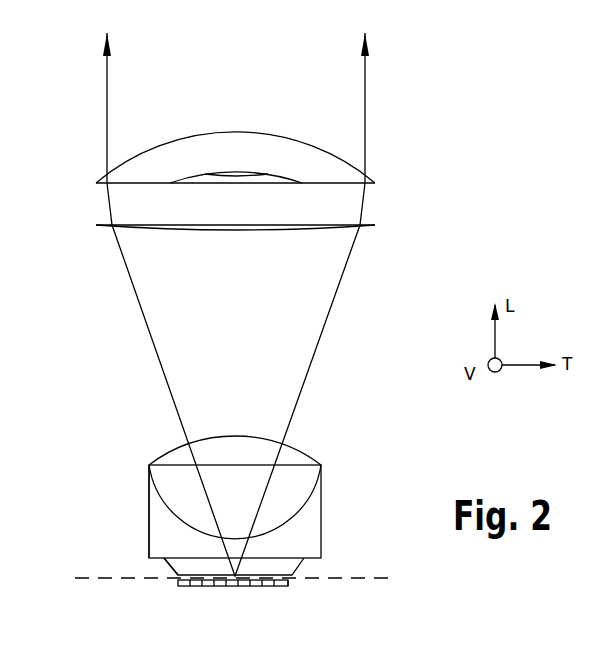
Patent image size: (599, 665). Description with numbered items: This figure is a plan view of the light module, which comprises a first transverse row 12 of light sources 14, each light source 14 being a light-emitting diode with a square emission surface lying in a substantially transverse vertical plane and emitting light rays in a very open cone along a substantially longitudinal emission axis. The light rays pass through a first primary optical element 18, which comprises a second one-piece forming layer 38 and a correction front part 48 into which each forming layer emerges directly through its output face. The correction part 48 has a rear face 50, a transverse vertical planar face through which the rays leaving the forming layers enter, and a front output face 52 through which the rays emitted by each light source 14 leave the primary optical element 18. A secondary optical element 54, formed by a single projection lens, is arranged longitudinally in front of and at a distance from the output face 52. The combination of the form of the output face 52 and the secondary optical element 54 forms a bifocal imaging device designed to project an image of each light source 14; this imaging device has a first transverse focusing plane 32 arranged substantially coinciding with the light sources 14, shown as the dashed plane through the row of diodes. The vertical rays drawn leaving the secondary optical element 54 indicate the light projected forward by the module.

The first transverse row 12 is at (304, 594).
The light source 14 is at (285, 587).
The first primary optical element 18 is at (345, 497).
The first transverse focusing plane 32 is at (364, 579).
The second one-piece forming layer 38 is at (293, 567).
The correction front part 48 is at (146, 503).
The rear face 50 is at (158, 563).
The front output face 52 is at (224, 436).
The secondary optical element 54 is at (395, 206).